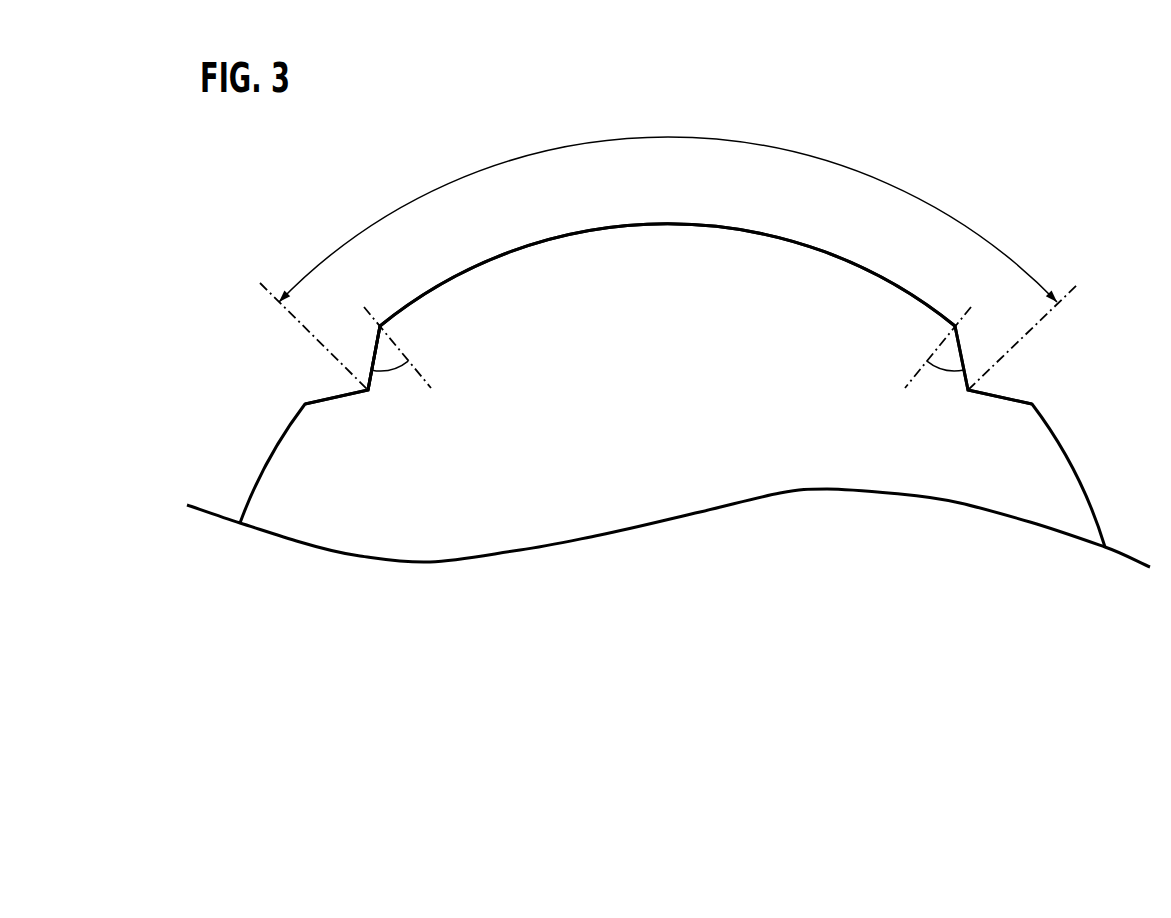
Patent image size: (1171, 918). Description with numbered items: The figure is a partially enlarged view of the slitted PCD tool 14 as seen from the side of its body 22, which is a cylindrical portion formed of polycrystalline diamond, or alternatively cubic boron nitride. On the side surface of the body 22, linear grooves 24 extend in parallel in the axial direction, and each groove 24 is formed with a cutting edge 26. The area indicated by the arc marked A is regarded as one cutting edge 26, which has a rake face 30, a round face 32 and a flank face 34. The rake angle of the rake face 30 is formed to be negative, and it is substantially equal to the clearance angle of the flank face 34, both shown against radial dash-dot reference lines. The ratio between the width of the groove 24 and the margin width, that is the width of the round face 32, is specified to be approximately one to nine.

The slitted PCD tool 14 is at (364, 131).
The body 22 is at (380, 533).
The groove 24 is at (318, 384).
The cutting edge 26 is at (797, 215).
The rake face 30 is at (360, 345).
The round face 32 is at (707, 223).
The flank face 34 is at (962, 355).